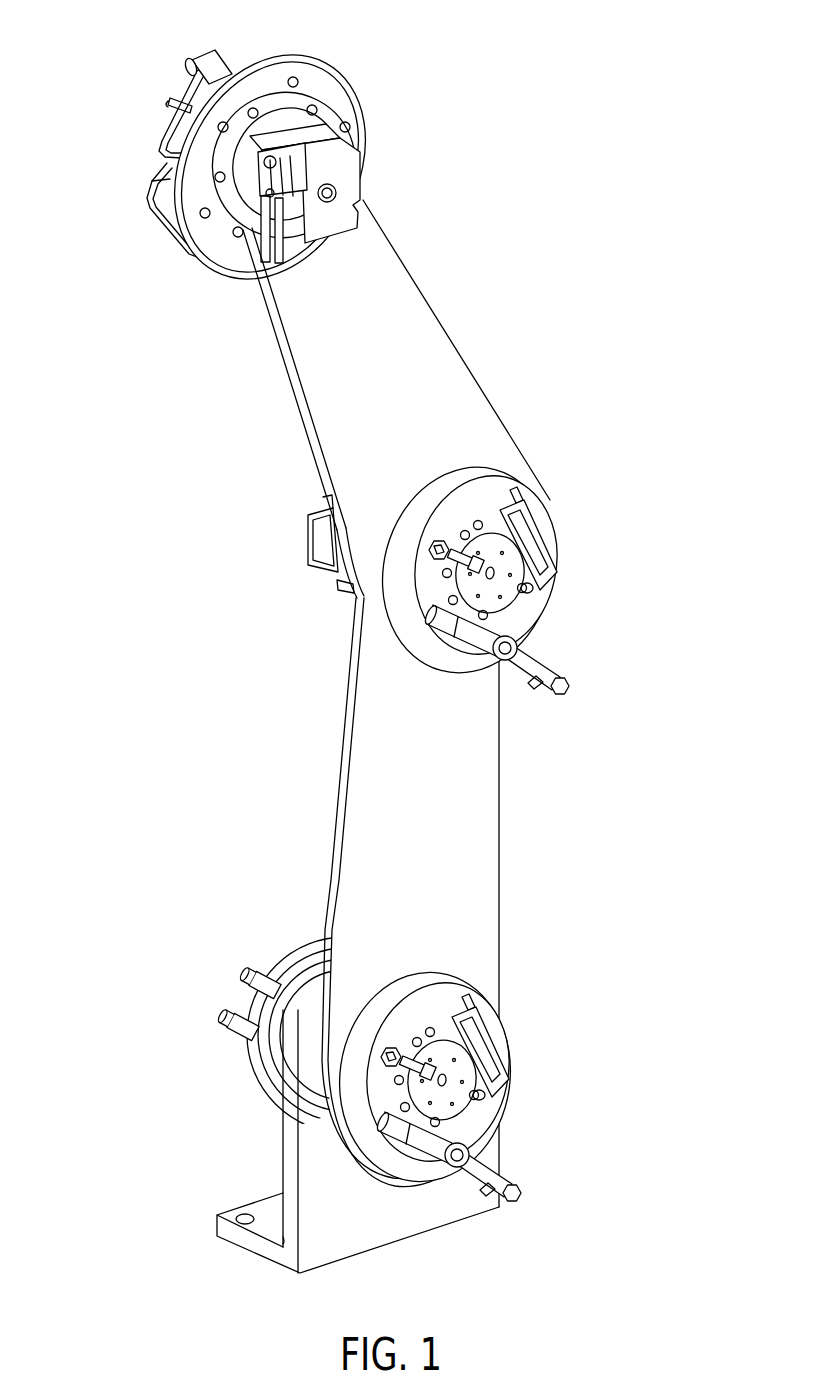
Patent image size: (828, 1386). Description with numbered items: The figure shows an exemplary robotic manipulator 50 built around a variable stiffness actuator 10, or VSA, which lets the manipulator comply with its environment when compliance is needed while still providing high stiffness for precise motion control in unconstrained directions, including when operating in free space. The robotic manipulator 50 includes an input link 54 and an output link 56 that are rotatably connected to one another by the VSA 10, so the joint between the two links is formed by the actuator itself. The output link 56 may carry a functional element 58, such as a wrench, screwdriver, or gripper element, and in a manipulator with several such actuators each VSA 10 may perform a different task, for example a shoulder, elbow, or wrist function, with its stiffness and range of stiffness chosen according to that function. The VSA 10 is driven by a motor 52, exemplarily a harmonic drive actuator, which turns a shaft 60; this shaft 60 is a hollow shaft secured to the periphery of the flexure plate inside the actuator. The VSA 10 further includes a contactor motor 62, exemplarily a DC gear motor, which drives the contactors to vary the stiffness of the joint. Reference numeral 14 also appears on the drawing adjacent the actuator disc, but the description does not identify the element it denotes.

The variable stiffness actuator 10 is at (376, 636).
The roller disc 14 is at (210, 248).
The robotic manipulator 50 is at (572, 302).
The motor 52 is at (356, 200).
The input link 54 is at (313, 390).
The output link 56 is at (168, 122).
The functional element 58 is at (148, 169).
The shaft 60 is at (338, 189).
The contactor motor 62 is at (196, 56).